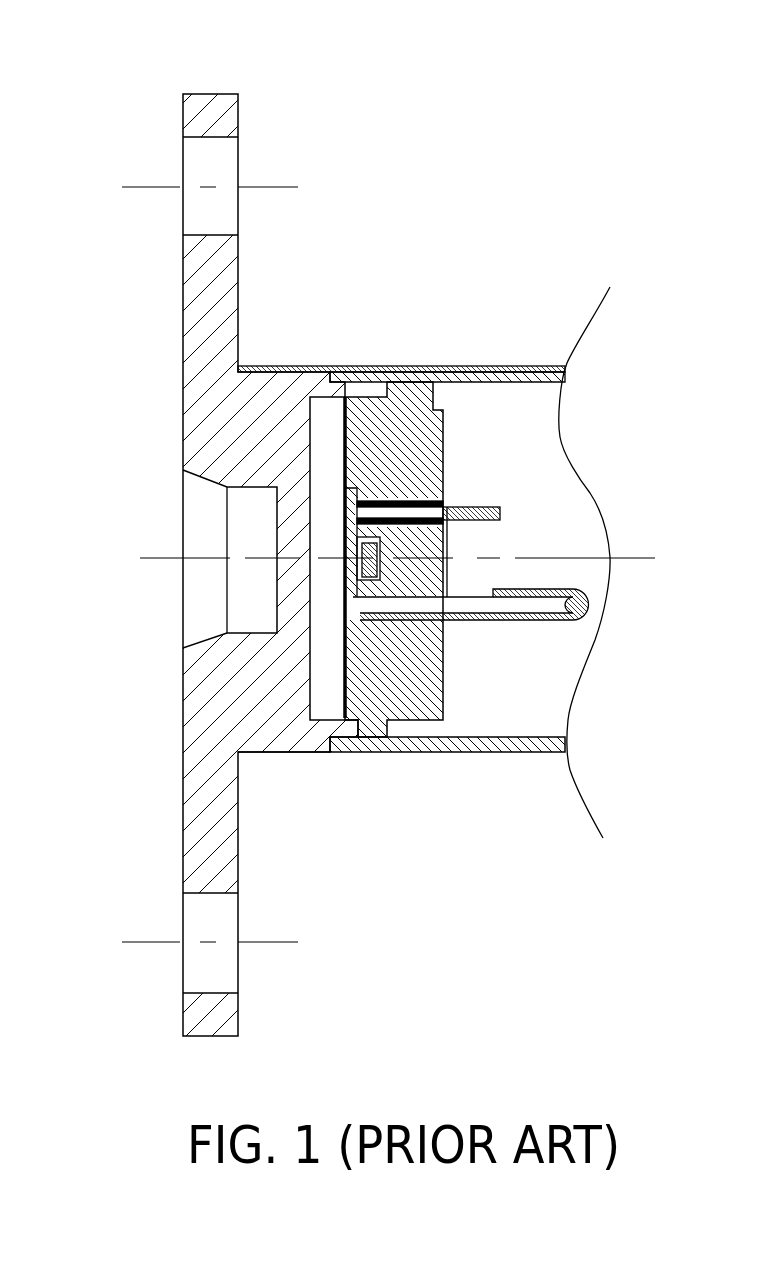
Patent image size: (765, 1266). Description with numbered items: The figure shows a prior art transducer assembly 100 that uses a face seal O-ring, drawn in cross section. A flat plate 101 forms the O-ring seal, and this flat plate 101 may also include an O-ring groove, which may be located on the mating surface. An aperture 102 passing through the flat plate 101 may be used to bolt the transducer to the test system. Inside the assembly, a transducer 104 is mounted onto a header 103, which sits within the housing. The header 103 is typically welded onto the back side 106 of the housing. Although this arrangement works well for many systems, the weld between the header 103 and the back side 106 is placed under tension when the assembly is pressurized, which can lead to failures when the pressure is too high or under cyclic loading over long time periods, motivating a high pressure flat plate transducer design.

The transducer assembly 100 is at (425, 32).
The flat plate 101 is at (158, 358).
The aperture 102 is at (225, 166).
The header 103 is at (403, 400).
The transducer 104 is at (410, 546).
The back side 106 is at (330, 424).